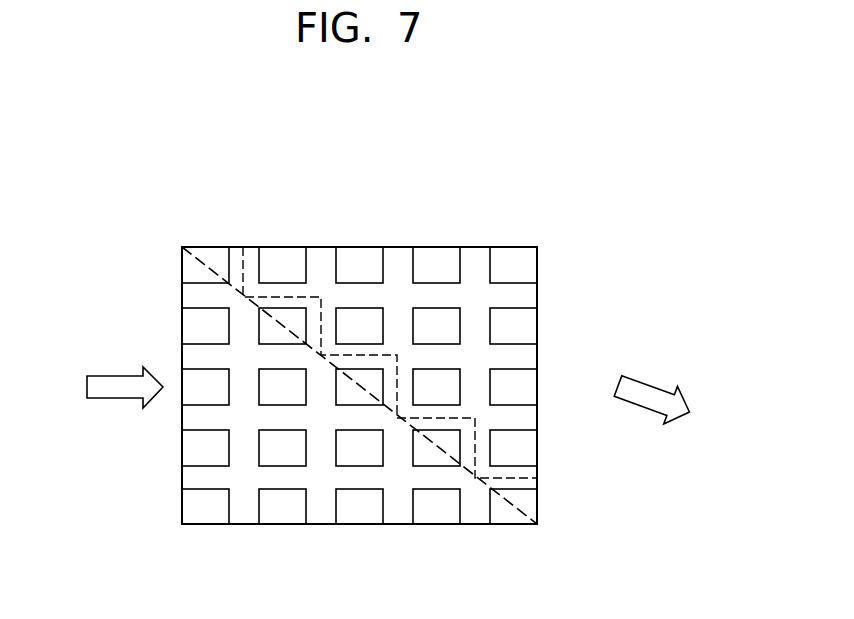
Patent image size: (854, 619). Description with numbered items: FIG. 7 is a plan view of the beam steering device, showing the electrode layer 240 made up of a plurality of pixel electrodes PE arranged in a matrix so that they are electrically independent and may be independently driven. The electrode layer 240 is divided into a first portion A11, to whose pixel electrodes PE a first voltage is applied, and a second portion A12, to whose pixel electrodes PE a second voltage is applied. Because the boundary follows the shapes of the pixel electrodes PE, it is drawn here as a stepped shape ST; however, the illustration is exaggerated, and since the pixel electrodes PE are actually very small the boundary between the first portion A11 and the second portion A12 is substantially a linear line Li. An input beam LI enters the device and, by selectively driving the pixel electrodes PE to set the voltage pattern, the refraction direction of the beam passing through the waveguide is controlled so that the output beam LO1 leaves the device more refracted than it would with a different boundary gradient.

The electrode layer 240 is at (423, 370).
The pixel electrode PE is at (358, 257).
The second portion A12 is at (473, 257).
The first portion A11 is at (398, 513).
The stepped shape ST is at (483, 422).
The linear line Li is at (505, 503).
The incident light LI is at (109, 387).
The output beam LO1 is at (679, 401).